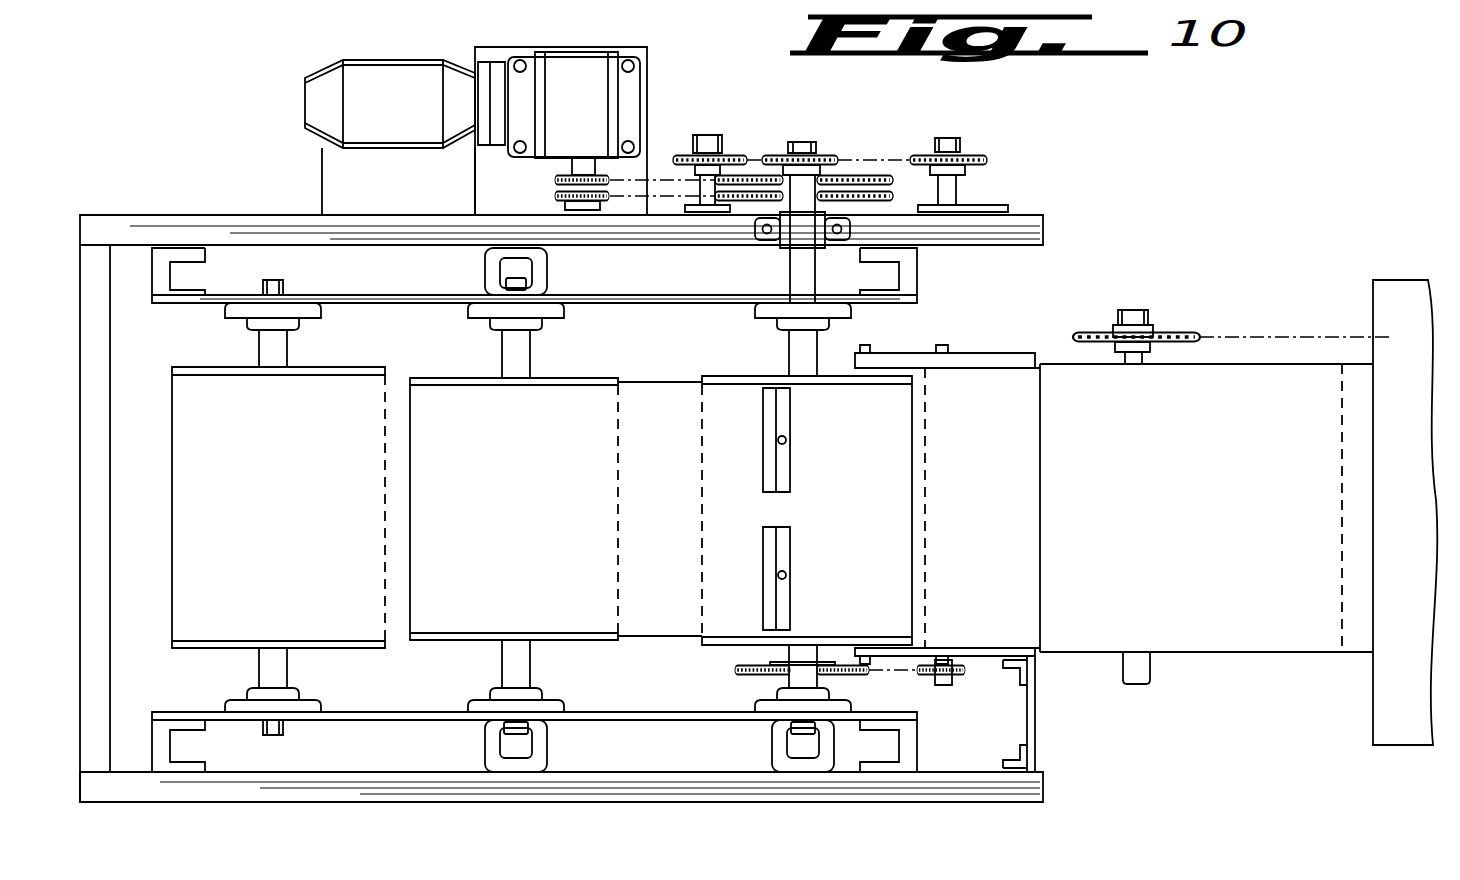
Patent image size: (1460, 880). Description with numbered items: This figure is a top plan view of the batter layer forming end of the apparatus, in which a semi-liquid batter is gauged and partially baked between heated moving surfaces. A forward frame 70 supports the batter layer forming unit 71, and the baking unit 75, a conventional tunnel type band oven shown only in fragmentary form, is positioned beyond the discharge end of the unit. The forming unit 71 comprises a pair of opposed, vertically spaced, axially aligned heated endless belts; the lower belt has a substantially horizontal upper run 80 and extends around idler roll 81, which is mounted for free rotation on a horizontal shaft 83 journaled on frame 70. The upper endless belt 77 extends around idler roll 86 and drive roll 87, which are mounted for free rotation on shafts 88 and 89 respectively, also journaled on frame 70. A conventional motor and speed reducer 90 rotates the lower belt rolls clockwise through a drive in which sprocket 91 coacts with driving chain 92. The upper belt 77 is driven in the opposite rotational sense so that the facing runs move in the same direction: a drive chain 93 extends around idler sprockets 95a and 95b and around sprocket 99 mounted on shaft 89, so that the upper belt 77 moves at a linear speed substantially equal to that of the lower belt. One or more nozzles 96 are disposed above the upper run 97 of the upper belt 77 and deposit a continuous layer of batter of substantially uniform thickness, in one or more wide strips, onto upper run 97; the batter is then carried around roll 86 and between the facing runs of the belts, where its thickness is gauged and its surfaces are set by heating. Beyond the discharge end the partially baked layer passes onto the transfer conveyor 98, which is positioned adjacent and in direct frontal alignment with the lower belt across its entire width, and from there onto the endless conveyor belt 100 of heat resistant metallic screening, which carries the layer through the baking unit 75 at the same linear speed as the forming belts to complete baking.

The forward frame 70 is at (116, 232).
The batter layer forming unit 71 is at (688, 816).
The baking unit 75 is at (1386, 292).
The upper endless belt 77 is at (656, 400).
The upper run 80 is at (404, 384).
The idler roll 81 is at (326, 374).
The shaft 83 is at (278, 290).
The idler roll 86 is at (576, 378).
The drive roll 87 is at (830, 376).
The shaft 88 is at (500, 664).
The shaft 89 is at (790, 670).
The motor and speed reducer 90 is at (645, 72).
The sprocket 91 is at (862, 192).
The driving chain 92 is at (656, 180).
The drive chain 93 is at (830, 176).
The idler sprocket 95a is at (962, 156).
The idler sprocket 95b is at (727, 158).
The nozzle 96 is at (785, 438).
The upper run 97 is at (718, 388).
The transfer conveyor 98 is at (972, 384).
The sprocket 99 is at (766, 156).
The endless conveyor belt 100 is at (1226, 378).